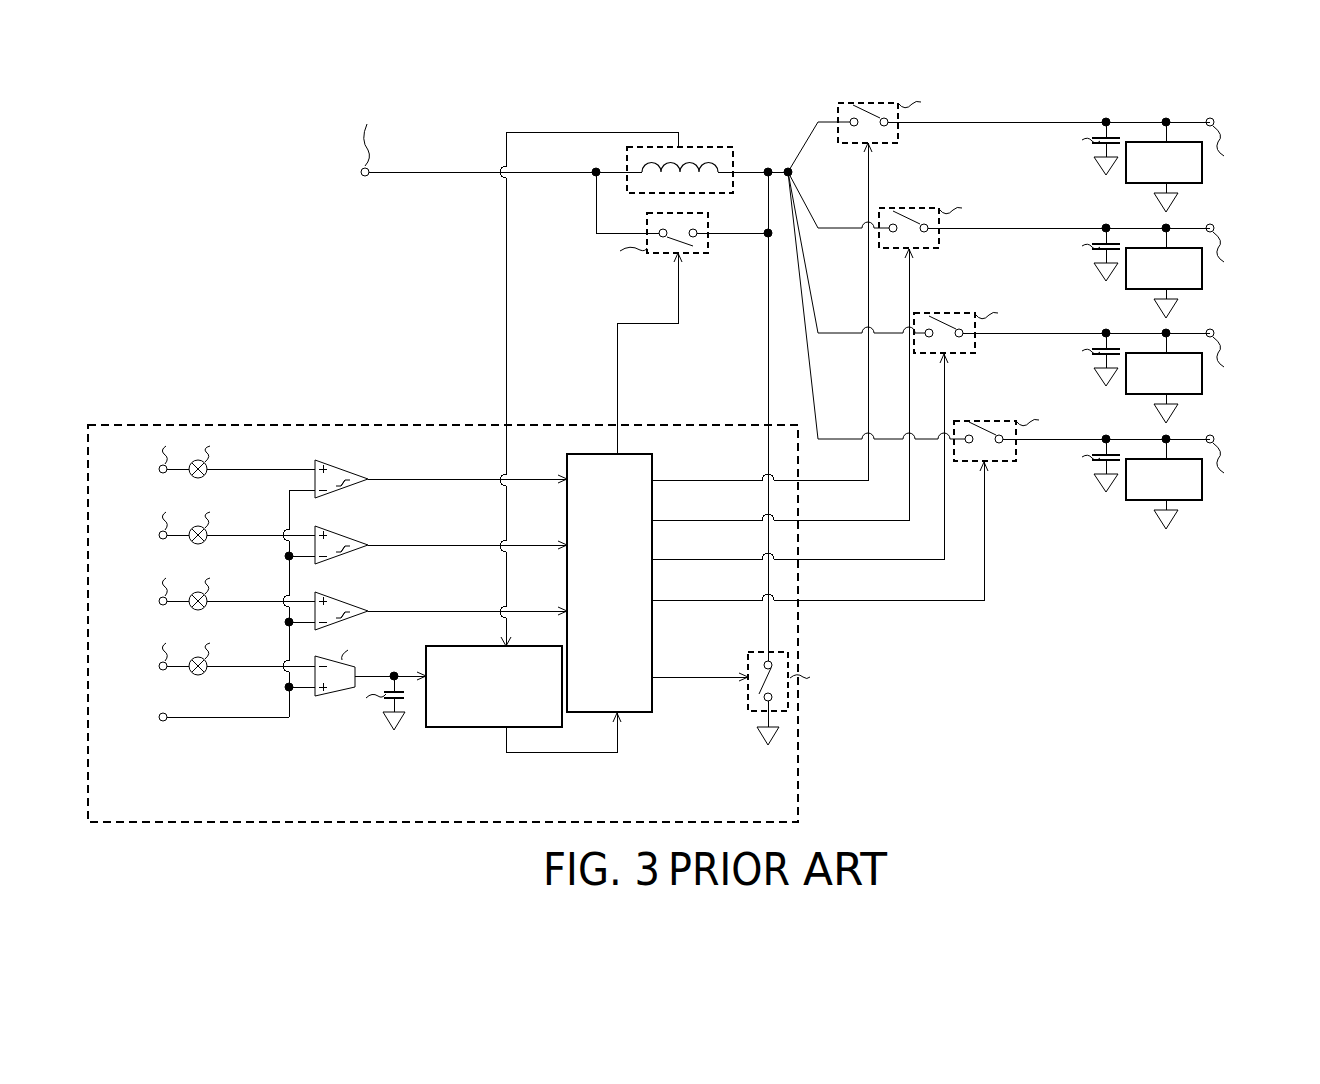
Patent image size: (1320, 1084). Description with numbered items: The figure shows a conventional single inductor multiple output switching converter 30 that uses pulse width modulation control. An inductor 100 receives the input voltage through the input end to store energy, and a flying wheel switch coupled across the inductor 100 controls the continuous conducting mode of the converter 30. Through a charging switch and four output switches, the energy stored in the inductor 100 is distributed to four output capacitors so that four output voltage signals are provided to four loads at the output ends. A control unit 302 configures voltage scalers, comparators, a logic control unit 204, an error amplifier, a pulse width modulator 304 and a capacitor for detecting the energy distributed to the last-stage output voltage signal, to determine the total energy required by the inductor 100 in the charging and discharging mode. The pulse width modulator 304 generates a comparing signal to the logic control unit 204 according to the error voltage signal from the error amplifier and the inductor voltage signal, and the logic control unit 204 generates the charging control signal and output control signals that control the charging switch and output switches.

The SIMO switching converter 30 is at (204, 222).
The inductor 100 is at (700, 147).
The control unit 302 is at (422, 425).
The logic control unit 204 is at (630, 454).
The pulse width modulator 304 is at (450, 728).